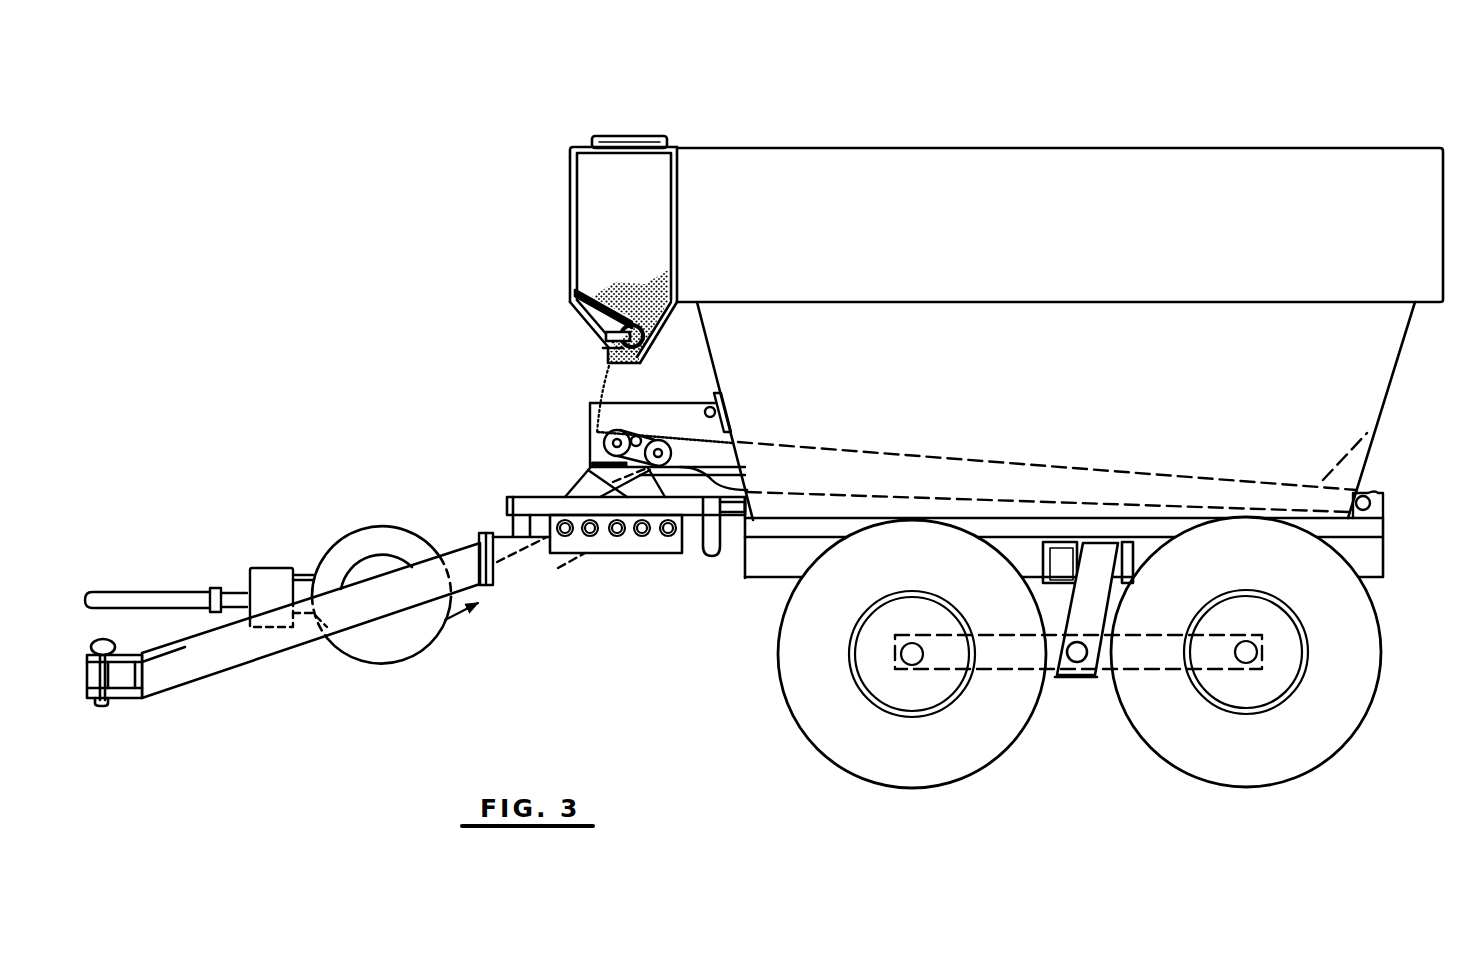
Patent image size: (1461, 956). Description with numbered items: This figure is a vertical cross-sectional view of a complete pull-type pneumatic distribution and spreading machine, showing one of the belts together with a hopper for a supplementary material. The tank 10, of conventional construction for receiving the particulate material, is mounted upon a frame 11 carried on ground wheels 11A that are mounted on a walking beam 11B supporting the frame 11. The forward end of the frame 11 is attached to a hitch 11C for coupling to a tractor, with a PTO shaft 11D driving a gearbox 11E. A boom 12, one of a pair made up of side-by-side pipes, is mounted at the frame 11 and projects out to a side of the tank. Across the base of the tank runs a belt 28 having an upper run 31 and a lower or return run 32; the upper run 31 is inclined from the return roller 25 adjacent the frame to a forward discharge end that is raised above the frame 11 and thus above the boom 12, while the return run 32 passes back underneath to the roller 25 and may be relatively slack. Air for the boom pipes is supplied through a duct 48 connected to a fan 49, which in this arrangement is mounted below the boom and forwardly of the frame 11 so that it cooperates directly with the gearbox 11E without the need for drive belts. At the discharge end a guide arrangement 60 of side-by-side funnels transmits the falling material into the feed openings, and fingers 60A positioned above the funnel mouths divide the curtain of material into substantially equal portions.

The tank 10 is at (1073, 135).
The frame 11 is at (1388, 545).
The ground wheels 11A is at (1137, 765).
The walking beam 11B is at (1156, 668).
The hitch 11C is at (220, 660).
The PTO shaft 11D is at (151, 594).
The gearbox 11E is at (275, 570).
The boom 12 is at (632, 545).
The return roller 25 is at (1368, 493).
The belt 28 is at (684, 430).
The upper run 31 is at (1028, 452).
The lower run 32 is at (845, 488).
The duct 48 is at (487, 605).
The fan 49 is at (388, 535).
The guide arrangement 60 is at (570, 477).
The fingers 60A is at (592, 478).